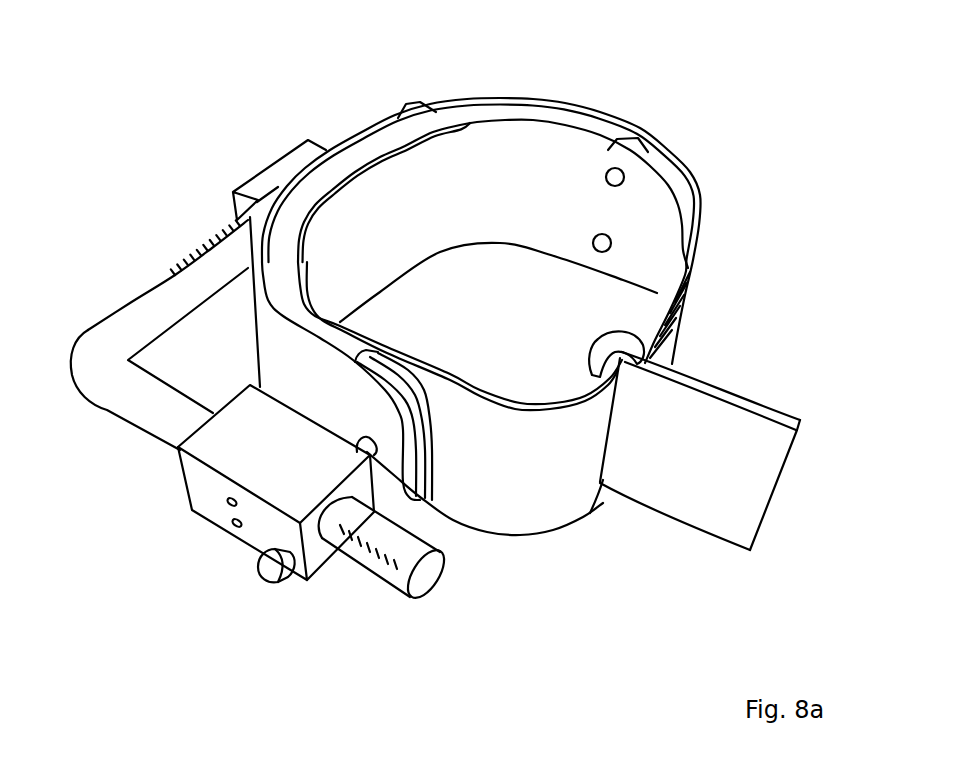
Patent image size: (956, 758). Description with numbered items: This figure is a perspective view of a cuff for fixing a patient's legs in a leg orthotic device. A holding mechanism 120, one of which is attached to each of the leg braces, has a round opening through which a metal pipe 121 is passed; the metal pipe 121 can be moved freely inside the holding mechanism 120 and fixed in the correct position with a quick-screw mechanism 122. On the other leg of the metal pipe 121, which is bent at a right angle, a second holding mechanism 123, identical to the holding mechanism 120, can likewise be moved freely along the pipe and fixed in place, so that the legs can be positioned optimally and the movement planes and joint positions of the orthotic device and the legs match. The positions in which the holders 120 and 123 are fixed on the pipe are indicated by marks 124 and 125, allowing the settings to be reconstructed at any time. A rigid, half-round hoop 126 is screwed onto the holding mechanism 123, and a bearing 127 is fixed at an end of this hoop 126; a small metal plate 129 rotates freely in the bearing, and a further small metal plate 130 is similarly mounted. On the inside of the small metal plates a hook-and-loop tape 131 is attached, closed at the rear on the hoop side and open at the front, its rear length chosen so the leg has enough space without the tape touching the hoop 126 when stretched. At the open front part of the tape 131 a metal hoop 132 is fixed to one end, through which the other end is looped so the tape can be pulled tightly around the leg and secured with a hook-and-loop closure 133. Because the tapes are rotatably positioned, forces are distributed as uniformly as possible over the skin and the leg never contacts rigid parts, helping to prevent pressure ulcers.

The holding mechanism 120 is at (203, 502).
The metal pipe 121 is at (107, 333).
The quick-screw mechanism 122 is at (270, 580).
The second holding mechanism 123 is at (283, 160).
The mark 124 is at (378, 582).
The mark 125 is at (198, 258).
The rigid, half-round hoop 126 is at (440, 120).
The bearing 127 is at (376, 440).
The small metal plate 129 is at (385, 363).
The small metal plate 130 is at (625, 140).
The hook-and-loop tape 131 is at (672, 205).
The metal hoop 132 is at (613, 348).
The hook-and-loop closure 133 is at (670, 322).